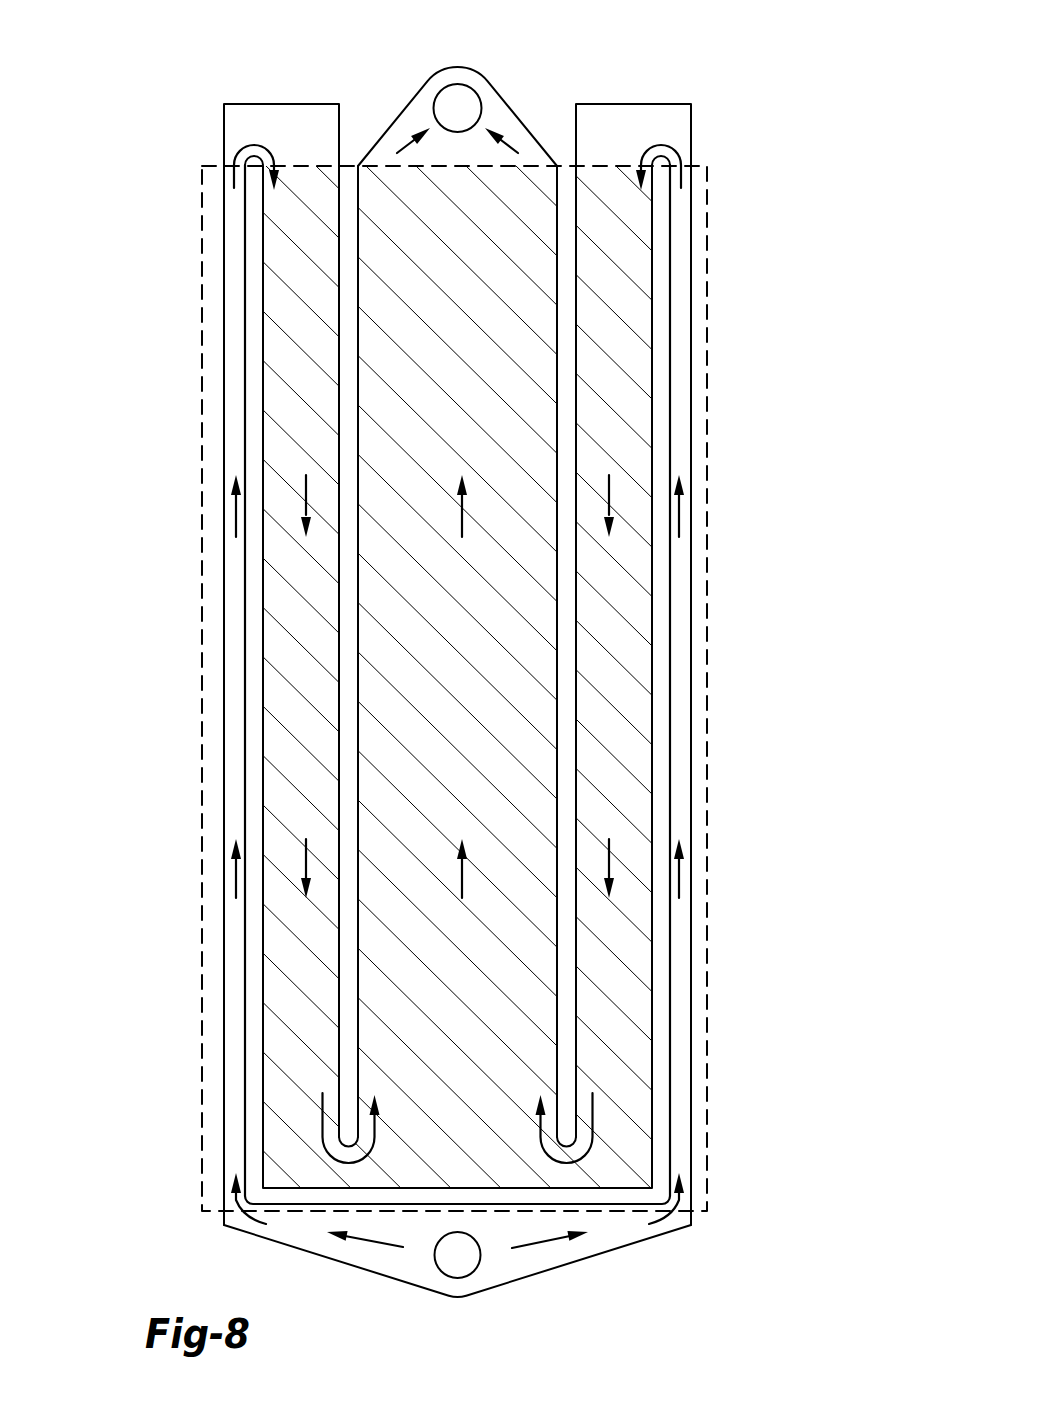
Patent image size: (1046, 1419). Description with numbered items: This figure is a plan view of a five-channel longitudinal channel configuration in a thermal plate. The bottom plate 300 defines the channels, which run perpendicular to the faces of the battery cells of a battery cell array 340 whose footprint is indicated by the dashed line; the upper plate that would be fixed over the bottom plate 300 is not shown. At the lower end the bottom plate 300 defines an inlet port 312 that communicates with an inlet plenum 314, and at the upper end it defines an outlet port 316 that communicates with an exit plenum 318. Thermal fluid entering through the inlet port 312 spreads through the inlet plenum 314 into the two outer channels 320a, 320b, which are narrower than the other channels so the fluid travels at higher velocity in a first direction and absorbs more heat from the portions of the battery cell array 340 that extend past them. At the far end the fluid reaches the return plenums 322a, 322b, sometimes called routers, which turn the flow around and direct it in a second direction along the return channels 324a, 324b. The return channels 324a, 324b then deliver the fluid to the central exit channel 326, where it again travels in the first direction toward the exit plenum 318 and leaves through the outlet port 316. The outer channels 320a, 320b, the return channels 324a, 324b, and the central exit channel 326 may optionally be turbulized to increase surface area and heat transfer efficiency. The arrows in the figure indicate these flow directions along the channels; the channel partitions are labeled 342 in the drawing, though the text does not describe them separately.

The bottom plate 300 is at (200, 86).
The inlet port 312 is at (458, 1255).
The inlet plenum 314 is at (602, 1233).
The outlet port 316 is at (458, 108).
The exit plenum 318 is at (497, 118).
The outer channel 320a is at (232, 262).
The outer channel 320b is at (680, 260).
The return plenum 322a is at (292, 127).
The return plenum 322b is at (640, 127).
The return channel 324a is at (277, 337).
The return channel 324b is at (638, 337).
The central exit channel 326 is at (517, 240).
The battery cell array 340 is at (708, 390).
The channel walls 342 is at (258, 602).